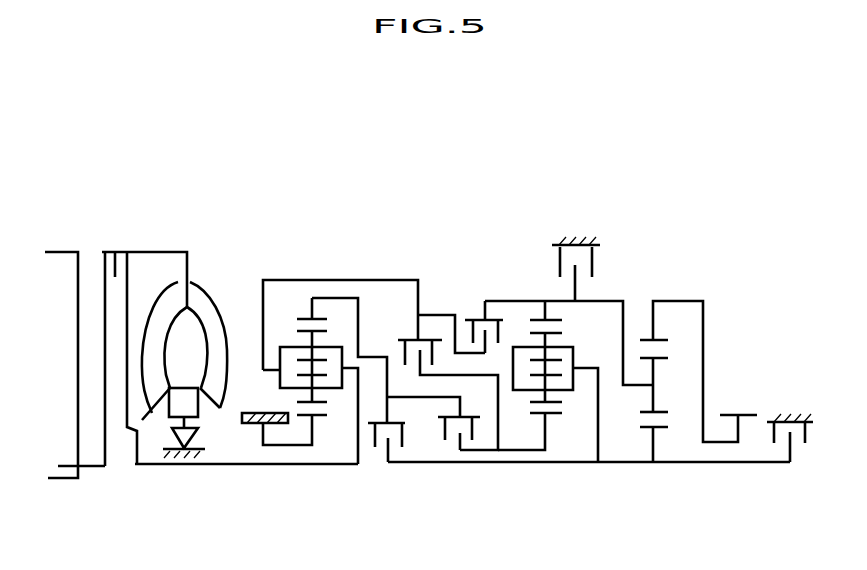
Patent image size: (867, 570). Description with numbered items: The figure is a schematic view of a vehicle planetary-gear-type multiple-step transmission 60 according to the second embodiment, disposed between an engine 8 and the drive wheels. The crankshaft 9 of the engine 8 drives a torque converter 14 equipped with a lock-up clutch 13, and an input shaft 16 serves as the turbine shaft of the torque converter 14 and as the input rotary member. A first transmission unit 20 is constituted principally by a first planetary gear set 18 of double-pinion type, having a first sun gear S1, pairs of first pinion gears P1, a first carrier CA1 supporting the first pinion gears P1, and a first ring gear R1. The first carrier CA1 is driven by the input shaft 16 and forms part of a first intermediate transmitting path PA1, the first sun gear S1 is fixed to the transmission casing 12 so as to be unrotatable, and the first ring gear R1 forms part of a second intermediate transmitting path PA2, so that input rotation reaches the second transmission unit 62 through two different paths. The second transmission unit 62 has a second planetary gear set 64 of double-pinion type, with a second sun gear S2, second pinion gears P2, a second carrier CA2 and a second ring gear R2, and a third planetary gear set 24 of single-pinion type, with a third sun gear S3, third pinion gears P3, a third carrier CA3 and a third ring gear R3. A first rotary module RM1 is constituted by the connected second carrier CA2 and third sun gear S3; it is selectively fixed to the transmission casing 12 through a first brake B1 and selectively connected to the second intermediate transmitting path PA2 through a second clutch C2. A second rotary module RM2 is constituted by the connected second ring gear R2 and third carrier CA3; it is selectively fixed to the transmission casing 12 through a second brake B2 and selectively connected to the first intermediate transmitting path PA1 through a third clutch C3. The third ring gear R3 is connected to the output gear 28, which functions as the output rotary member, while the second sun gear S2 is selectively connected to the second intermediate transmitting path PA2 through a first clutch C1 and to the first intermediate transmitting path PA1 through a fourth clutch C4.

The engine 8 is at (62, 252).
The crankshaft 9 is at (90, 465).
The transmission casing 12 is at (568, 240).
The lock-up clutch 13 is at (134, 264).
The torque converter 14 is at (203, 258).
The input shaft 16 is at (187, 466).
The first planetary gear set 18 is at (312, 478).
The first transmission unit 20 is at (313, 204).
The third planetary gear set 24 is at (657, 480).
The output gear 28 is at (748, 412).
The transmission 60 is at (437, 119).
The second transmission unit 62 is at (605, 172).
The second planetary gear set 64 is at (535, 480).
The first intermediate transmitting path PA1 is at (348, 279).
The second intermediate transmitting path PA2 is at (377, 350).
The first ring gear R1 is at (308, 317).
The first carrier CA1 is at (274, 373).
The first pinion gears P1 is at (317, 396).
The first sun gear S1 is at (313, 418).
The second ring gear R2 is at (553, 312).
The second carrier CA2 is at (519, 392).
The second pinion gears P2 is at (554, 398).
The second sun gear S2 is at (563, 418).
The third ring gear R3 is at (647, 336).
The third carrier CA3 is at (632, 389).
The third pinion gears P3 is at (665, 408).
The third sun gear S3 is at (665, 432).
The first clutch C1 is at (436, 421).
The second clutch C2 is at (397, 442).
The third clutch C3 is at (482, 324).
The fourth clutch C4 is at (443, 383).
The first brake B1 is at (790, 424).
The second brake B2 is at (564, 274).
The first rotary module RM1 is at (620, 463).
The second rotary module RM2 is at (607, 295).